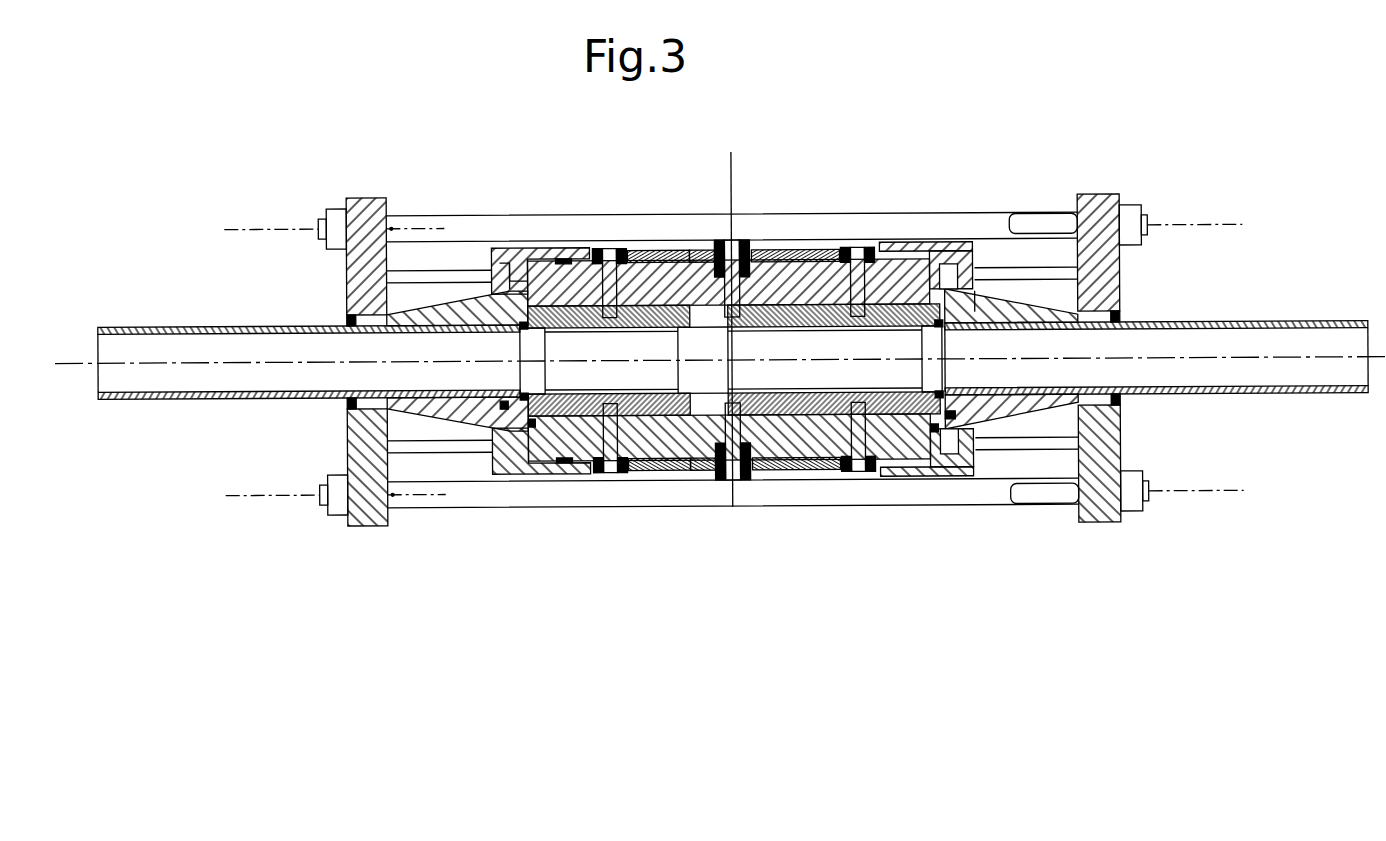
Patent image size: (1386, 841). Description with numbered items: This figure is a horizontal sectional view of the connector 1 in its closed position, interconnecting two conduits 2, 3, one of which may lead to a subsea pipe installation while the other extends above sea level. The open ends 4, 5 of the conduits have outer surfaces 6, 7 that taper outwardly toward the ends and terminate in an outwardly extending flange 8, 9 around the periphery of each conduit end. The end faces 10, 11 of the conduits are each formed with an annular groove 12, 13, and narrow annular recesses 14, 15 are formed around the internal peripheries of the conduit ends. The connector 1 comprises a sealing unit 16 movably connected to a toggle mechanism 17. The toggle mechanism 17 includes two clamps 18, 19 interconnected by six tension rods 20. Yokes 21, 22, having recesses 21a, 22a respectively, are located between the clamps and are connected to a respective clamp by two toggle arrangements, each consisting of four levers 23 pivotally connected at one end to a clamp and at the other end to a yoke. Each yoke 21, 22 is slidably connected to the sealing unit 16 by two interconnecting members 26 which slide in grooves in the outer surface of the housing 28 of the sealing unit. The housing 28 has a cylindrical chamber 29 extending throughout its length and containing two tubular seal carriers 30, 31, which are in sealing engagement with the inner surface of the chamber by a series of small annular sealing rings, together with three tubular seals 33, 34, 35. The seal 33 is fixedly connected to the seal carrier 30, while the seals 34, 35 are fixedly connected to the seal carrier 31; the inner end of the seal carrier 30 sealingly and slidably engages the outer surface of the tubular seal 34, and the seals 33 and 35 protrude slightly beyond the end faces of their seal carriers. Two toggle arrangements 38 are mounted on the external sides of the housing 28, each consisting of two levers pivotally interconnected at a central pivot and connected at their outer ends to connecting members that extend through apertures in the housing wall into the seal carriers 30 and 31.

The connector 1 is at (770, 361).
The conduit 2 is at (237, 397).
The conduit 3 is at (1228, 394).
The open end 4 is at (490, 406).
The open end 5 is at (953, 351).
The outer surface 6 is at (423, 409).
The outer surface 7 is at (1033, 414).
The flange 8 is at (533, 421).
The flange 9 is at (952, 421).
The end face 10 is at (562, 448).
The end face 11 is at (930, 433).
The annular groove 12 is at (563, 256).
The annular groove 13 is at (975, 313).
The annular recess 14 is at (512, 346).
The annular recess 15 is at (953, 338).
The sealing unit 16 is at (693, 246).
The toggle mechanism 17 is at (1125, 192).
The clamp 18 is at (373, 196).
The clamp 19 is at (1093, 195).
The tension rods 20 is at (598, 227).
The yoke 21 is at (480, 252).
The recess 21a is at (523, 255).
The yoke 22 is at (993, 259).
The recess 22a is at (947, 257).
The levers 23 is at (421, 276).
The interconnecting members 26 is at (637, 252).
The housing 28 is at (783, 288).
The cylindrical chamber 29 is at (608, 387).
The seal carrier 30 is at (667, 256).
The seal carrier 31 is at (812, 317).
The tubular seal 33 is at (538, 351).
The tubular seal 34 is at (723, 352).
The tubular seal 35 is at (927, 342).
The toggle arrangements 38 is at (710, 262).